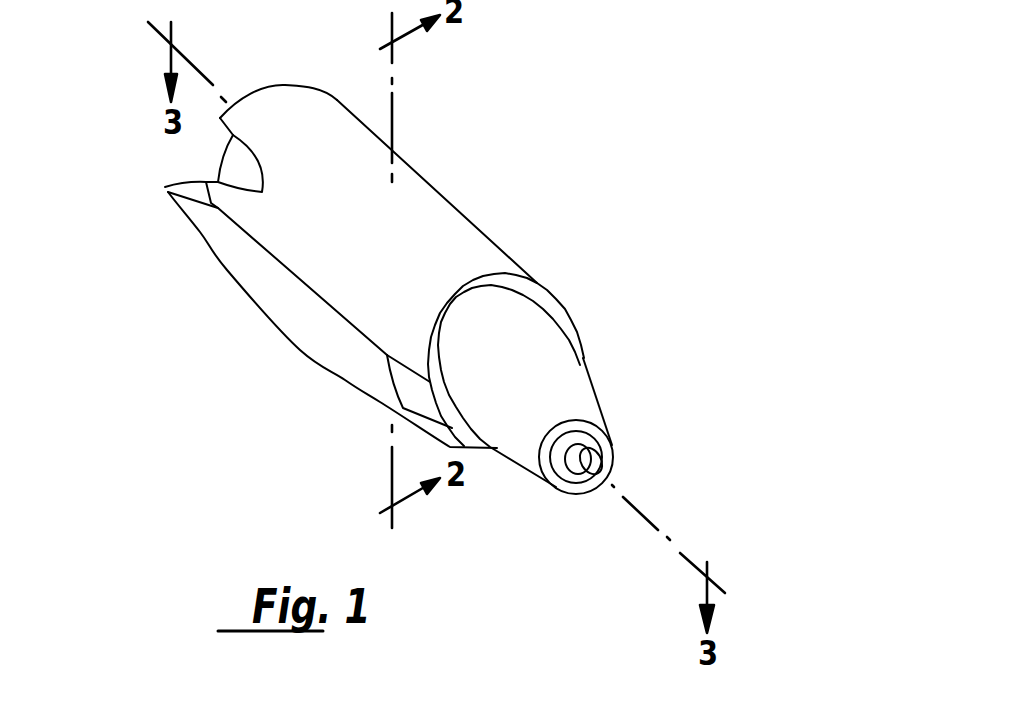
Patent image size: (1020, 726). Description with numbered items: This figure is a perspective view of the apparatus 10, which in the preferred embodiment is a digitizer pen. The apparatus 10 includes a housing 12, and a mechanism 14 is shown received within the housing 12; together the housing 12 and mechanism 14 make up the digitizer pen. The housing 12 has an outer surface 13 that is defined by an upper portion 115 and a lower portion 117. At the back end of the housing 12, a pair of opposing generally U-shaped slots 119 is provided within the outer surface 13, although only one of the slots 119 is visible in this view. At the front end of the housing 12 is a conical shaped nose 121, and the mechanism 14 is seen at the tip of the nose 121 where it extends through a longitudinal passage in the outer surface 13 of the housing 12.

The apparatus 10 is at (502, 118).
The housing 12 is at (210, 280).
The outer surface 13 is at (448, 235).
The mechanism 14 is at (587, 468).
The upper portion 115 is at (290, 87).
The lower portion 117 is at (165, 187).
The generally U-shaped slot 119 is at (230, 132).
The conical shaped nose 121 is at (563, 378).